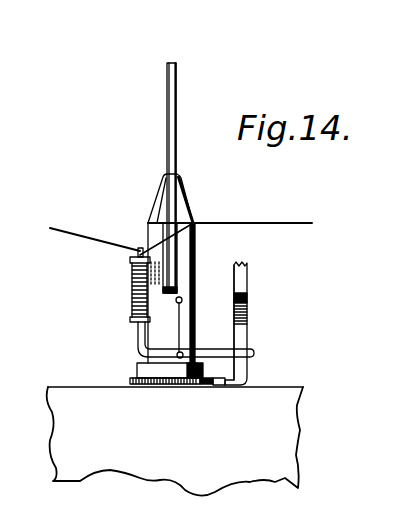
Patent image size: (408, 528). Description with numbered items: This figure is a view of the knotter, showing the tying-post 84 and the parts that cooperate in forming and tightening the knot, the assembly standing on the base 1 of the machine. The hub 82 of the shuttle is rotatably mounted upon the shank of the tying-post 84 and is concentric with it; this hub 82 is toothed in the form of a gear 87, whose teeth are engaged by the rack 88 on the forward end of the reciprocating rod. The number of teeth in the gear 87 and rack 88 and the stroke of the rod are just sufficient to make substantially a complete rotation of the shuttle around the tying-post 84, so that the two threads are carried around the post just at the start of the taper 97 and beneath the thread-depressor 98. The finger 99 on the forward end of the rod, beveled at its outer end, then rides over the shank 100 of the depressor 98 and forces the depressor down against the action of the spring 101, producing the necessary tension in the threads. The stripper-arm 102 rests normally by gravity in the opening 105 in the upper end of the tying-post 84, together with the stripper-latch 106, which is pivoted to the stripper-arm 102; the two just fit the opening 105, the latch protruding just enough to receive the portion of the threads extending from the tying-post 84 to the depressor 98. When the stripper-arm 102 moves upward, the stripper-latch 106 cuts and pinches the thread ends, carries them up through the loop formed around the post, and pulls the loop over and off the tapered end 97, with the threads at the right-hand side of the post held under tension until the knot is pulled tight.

The base 1 is at (45, 415).
The hub 82 is at (137, 370).
The tying-post 84 is at (193, 283).
The gear 87 is at (157, 387).
The rack 88 is at (225, 386).
The taper 97 is at (190, 204).
The thread-depressor 98 is at (138, 252).
The finger 99 is at (248, 320).
The shank 100 is at (254, 353).
The spring 101 is at (135, 286).
The stripper-arm 102 is at (168, 140).
The opening 105 is at (165, 170).
The stripper-latch 106 is at (137, 268).